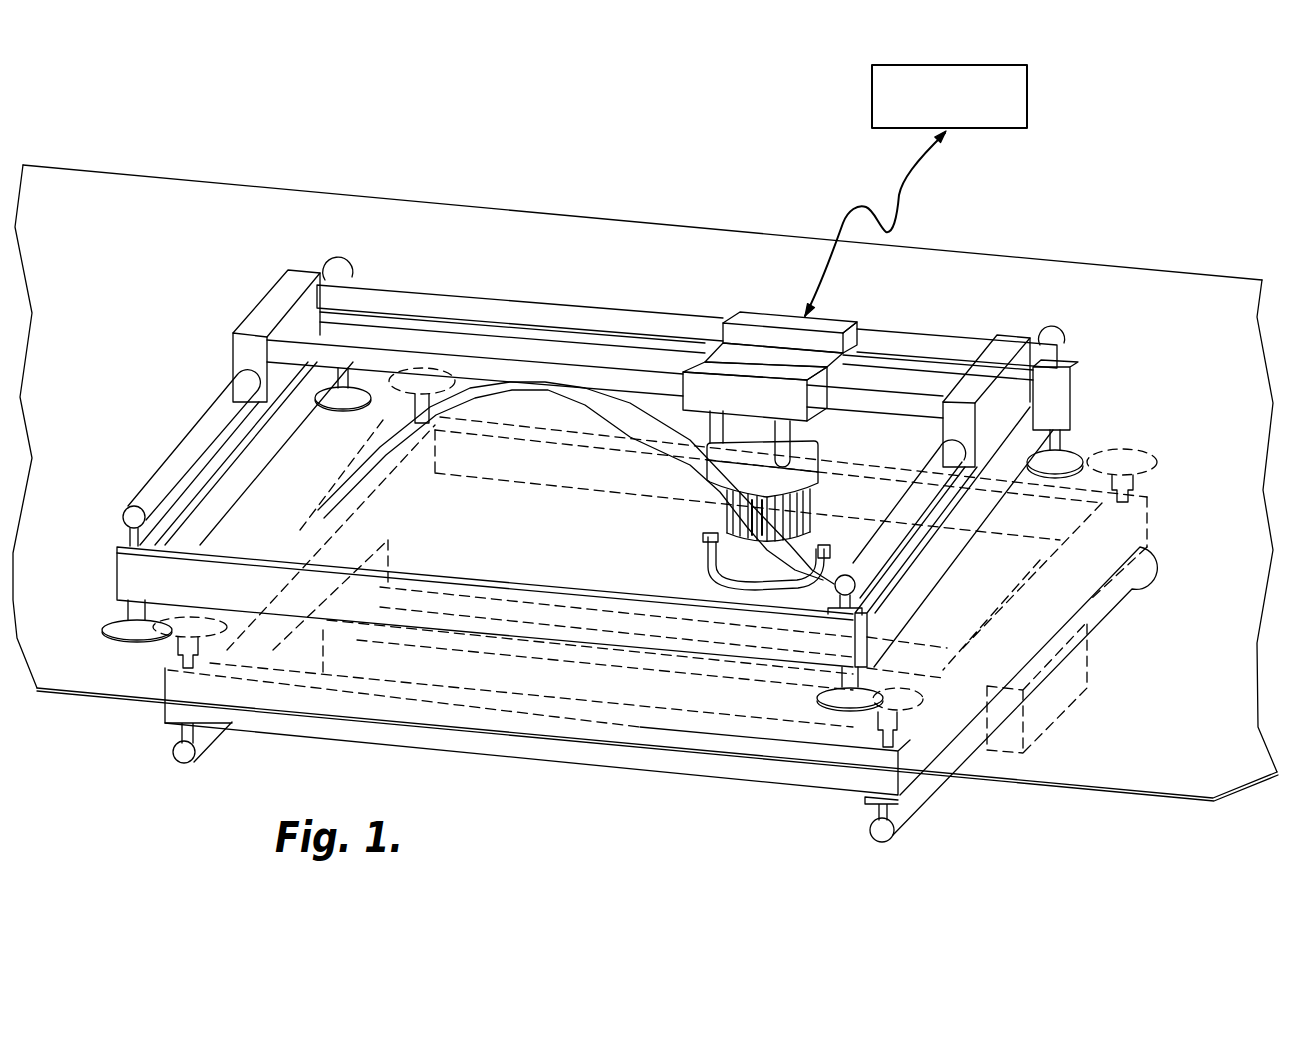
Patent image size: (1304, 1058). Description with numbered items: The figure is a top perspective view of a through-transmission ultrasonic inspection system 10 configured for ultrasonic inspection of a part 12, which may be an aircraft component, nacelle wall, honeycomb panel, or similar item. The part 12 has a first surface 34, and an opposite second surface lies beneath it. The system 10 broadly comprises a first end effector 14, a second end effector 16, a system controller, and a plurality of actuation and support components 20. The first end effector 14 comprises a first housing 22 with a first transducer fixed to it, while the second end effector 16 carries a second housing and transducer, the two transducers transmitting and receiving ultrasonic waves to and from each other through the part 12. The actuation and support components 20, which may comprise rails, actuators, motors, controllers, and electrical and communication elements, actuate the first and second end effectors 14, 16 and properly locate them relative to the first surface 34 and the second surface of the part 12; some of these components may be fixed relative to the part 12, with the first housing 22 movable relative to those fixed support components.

The through-transmission ultrasonic inspection system 10 is at (629, 453).
The part 12 is at (1103, 293).
The first end effector 14 is at (747, 428).
The second end effector 16 is at (707, 568).
The actuation and support components 20 is at (208, 440).
The first housing 22 is at (800, 428).
The first surface 34 is at (1227, 582).